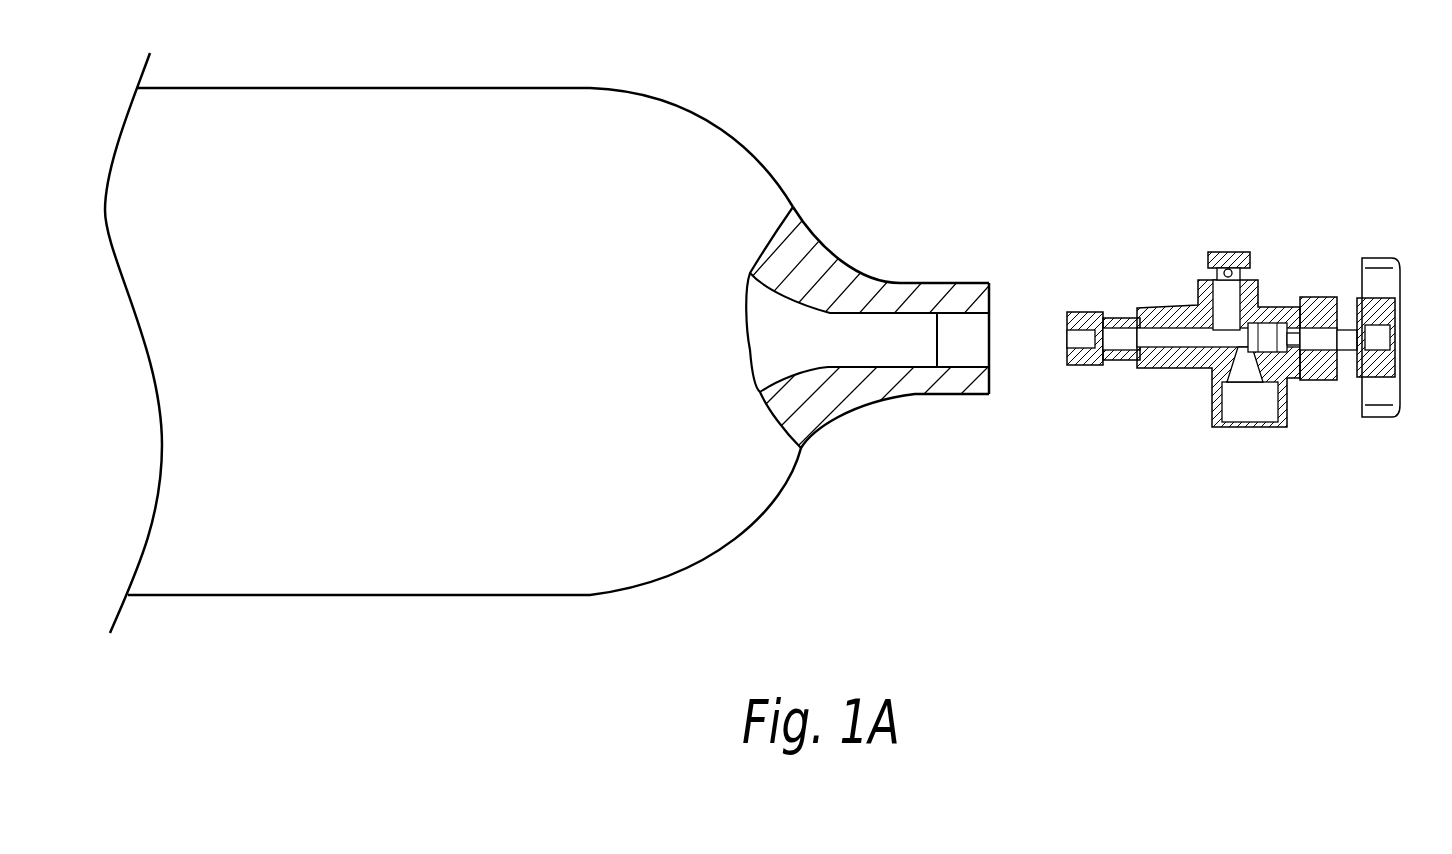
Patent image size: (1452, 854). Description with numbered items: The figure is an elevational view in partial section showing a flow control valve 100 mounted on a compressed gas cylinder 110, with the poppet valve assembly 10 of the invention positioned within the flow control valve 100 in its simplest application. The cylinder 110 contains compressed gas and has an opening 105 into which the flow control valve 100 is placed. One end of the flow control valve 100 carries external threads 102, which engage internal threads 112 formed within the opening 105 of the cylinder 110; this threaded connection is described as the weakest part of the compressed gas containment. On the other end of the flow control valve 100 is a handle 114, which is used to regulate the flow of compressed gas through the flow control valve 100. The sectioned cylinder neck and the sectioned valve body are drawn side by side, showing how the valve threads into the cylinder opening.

The poppet valve assembly 10 is at (1257, 335).
The flow control valve 100 is at (1320, 296).
The external threads 102 is at (1175, 373).
The opening 105 is at (881, 354).
The cylinder 110 is at (464, 354).
The internal threads 112 is at (967, 366).
The handle 114 is at (1397, 403).